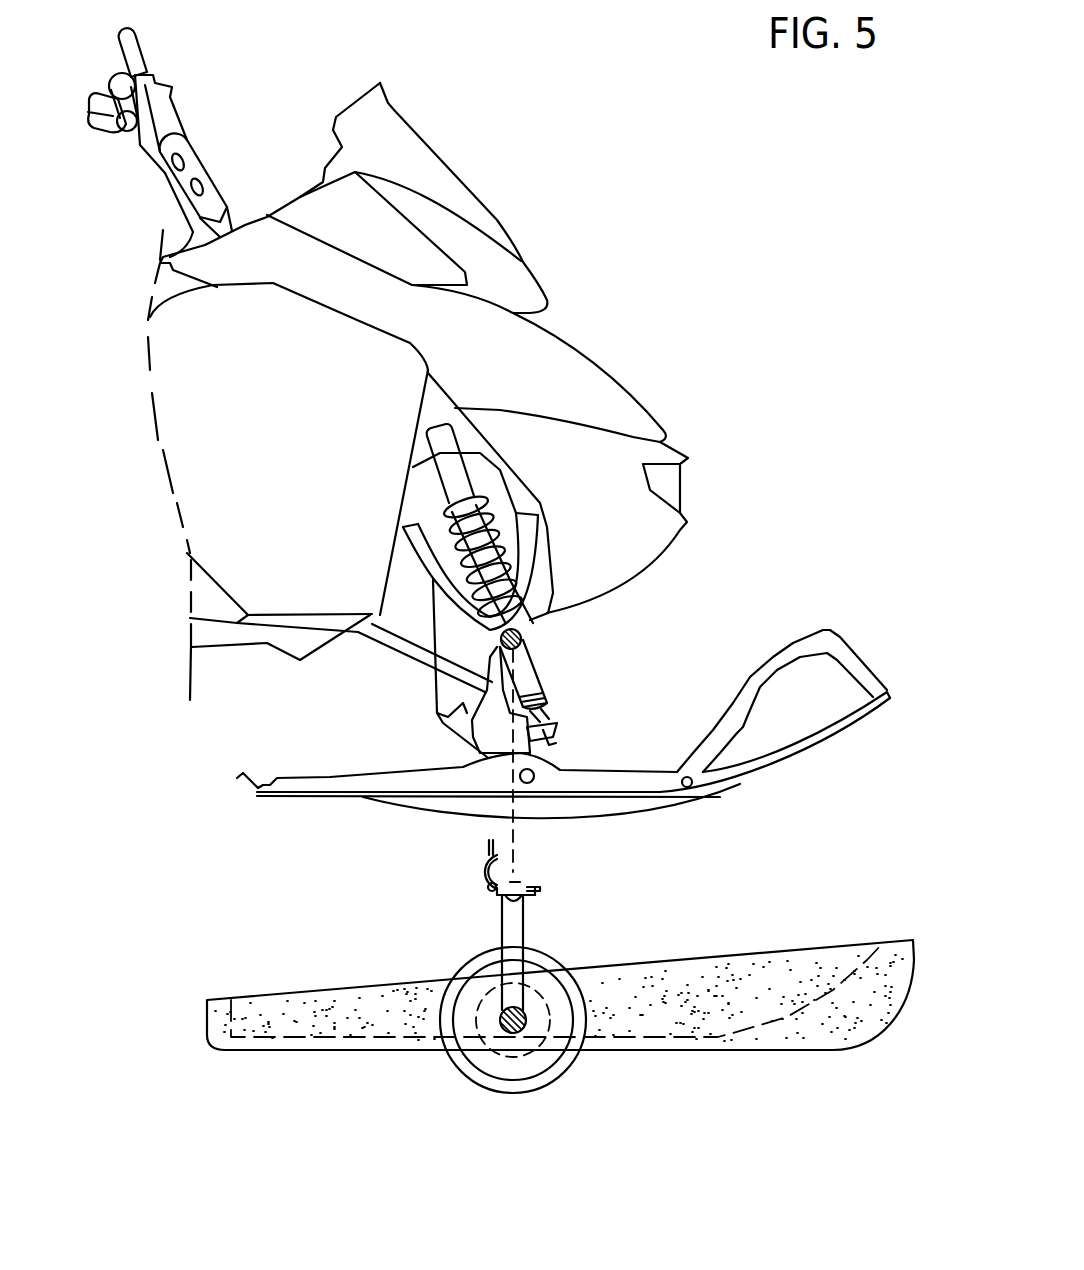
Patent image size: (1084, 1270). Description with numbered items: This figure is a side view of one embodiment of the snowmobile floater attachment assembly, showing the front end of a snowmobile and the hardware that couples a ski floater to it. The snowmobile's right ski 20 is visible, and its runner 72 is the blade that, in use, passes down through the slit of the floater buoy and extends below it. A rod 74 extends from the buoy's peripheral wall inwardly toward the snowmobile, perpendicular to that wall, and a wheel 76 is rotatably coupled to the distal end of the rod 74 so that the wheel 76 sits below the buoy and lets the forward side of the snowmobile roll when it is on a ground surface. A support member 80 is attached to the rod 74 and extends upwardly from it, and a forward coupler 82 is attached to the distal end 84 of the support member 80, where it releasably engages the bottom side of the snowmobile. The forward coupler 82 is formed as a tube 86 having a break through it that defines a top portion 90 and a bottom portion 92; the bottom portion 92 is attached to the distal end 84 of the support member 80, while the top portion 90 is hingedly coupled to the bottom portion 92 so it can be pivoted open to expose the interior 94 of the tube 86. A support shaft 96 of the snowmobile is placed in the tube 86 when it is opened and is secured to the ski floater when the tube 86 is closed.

The right ski 20 is at (700, 770).
The runner 72 is at (617, 807).
The rod 74 is at (520, 1024).
The wheel 76 is at (487, 1073).
The support member 80 is at (523, 930).
The forward coupler 82 is at (465, 873).
The distal end 84 is at (503, 902).
The tube 86 is at (505, 862).
The top portion 90 is at (483, 860).
The bottom portion 92 is at (535, 890).
The interior 94 is at (517, 878).
The support shaft 96 is at (537, 648).